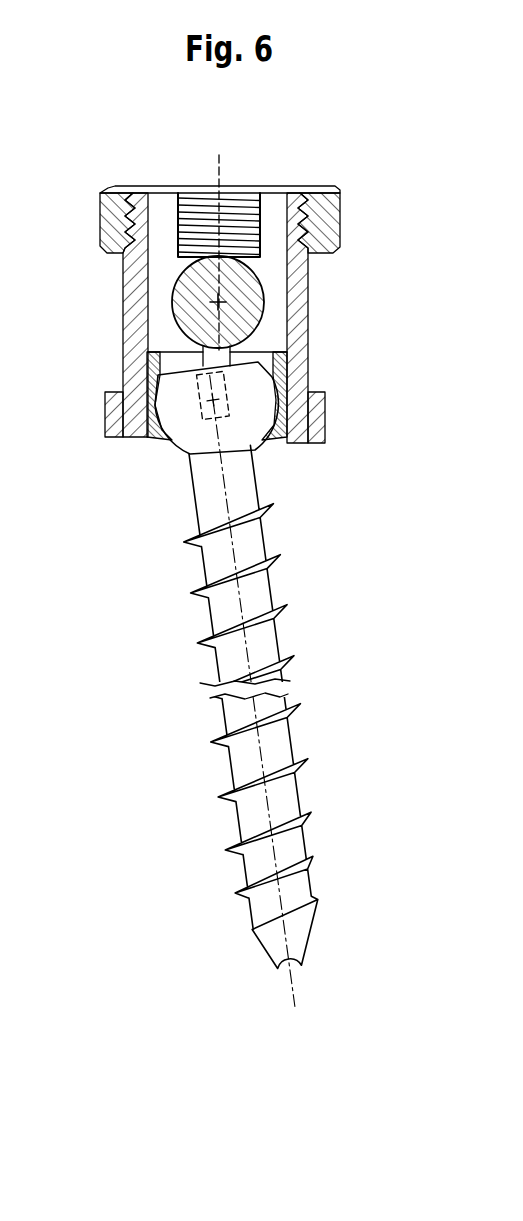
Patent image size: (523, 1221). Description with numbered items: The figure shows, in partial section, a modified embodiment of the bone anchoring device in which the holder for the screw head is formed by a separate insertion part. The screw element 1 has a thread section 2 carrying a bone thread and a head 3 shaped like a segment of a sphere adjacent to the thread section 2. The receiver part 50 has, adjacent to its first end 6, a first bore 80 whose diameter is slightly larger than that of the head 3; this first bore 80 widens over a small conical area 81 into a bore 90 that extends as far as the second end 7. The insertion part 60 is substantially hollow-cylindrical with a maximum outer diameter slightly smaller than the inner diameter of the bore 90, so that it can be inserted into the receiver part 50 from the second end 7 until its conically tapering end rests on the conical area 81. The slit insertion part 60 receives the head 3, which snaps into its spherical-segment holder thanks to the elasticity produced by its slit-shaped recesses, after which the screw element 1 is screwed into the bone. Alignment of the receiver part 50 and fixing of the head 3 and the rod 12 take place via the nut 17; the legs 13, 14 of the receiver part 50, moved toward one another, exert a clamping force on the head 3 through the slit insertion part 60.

The screw element 1 is at (256, 687).
The thread section 2 is at (225, 607).
The head 3 is at (245, 423).
The first end 6 is at (132, 438).
The second end 7 is at (217, 175).
The rod 12 is at (262, 303).
The leg 13 is at (126, 210).
The leg 14 is at (300, 225).
The nut 17 is at (338, 185).
The receiver part 50 is at (209, 344).
The insertion part 60 is at (286, 370).
The first bore 80 is at (168, 439).
The conical area 81 is at (145, 420).
The bore 90 is at (150, 268).